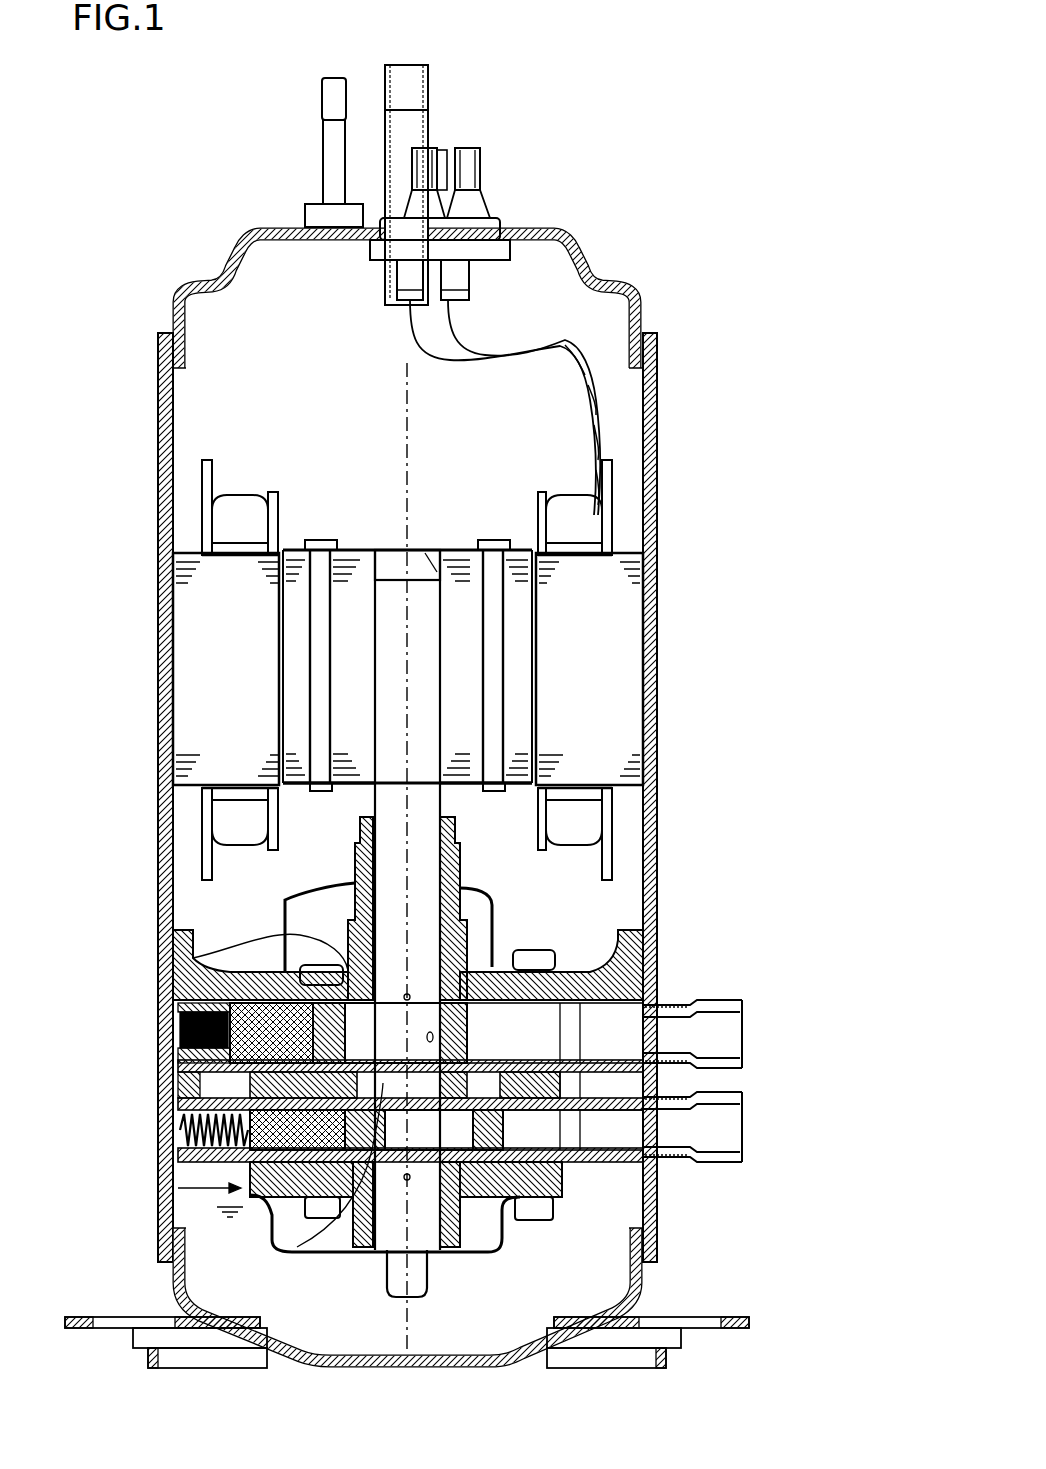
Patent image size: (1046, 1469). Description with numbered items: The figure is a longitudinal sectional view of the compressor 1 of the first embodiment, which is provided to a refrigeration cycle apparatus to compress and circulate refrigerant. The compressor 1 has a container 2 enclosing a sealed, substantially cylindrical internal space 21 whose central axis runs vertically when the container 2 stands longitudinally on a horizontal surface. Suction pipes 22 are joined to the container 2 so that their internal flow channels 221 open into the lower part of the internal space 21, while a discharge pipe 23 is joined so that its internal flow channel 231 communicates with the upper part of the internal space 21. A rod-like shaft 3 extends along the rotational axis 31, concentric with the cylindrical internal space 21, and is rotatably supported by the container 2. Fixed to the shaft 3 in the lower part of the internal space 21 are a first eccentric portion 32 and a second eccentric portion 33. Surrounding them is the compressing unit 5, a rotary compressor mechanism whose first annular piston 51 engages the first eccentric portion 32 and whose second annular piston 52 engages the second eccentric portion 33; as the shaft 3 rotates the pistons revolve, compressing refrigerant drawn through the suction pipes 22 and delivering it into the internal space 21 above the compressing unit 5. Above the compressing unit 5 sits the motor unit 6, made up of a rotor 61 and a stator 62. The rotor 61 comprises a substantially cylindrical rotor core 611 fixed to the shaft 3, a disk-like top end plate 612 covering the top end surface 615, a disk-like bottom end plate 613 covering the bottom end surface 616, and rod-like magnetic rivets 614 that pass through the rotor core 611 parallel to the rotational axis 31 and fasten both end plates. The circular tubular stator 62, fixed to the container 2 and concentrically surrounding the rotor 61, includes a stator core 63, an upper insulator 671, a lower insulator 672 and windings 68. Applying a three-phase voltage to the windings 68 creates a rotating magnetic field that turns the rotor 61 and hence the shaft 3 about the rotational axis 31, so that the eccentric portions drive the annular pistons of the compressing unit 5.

The compressor 1 is at (702, 127).
The container 2 is at (407, 758).
The internal space 21 is at (283, 268).
The suction pipes 22 is at (744, 1046).
The flow channel 221 is at (682, 1040).
The discharge pipe 23 is at (485, 265).
The flow channel 231 is at (405, 75).
The shaft 3 is at (372, 803).
The rotational axis 31 is at (405, 405).
The first eccentric portion 32 is at (343, 968).
The second eccentric portion 33 is at (250, 1128).
The compressing unit 5 is at (360, 1135).
The first annular piston 51 is at (397, 1133).
The second annular piston 52 is at (330, 1250).
The motor unit 6 is at (232, 460).
The rotor 61 is at (511, 680).
The rotor core 611 is at (515, 684).
The top end plate 612 is at (505, 540).
The bottom end plate 613 is at (520, 792).
The rivets 614 is at (506, 631).
The top end surface 615 is at (363, 548).
The bottom end surface 616 is at (450, 787).
The stator 62 is at (356, 658).
The stator core 63 is at (205, 673).
The upper insulator 671 is at (210, 547).
The lower insulator 672 is at (212, 827).
The windings 68 is at (233, 513).